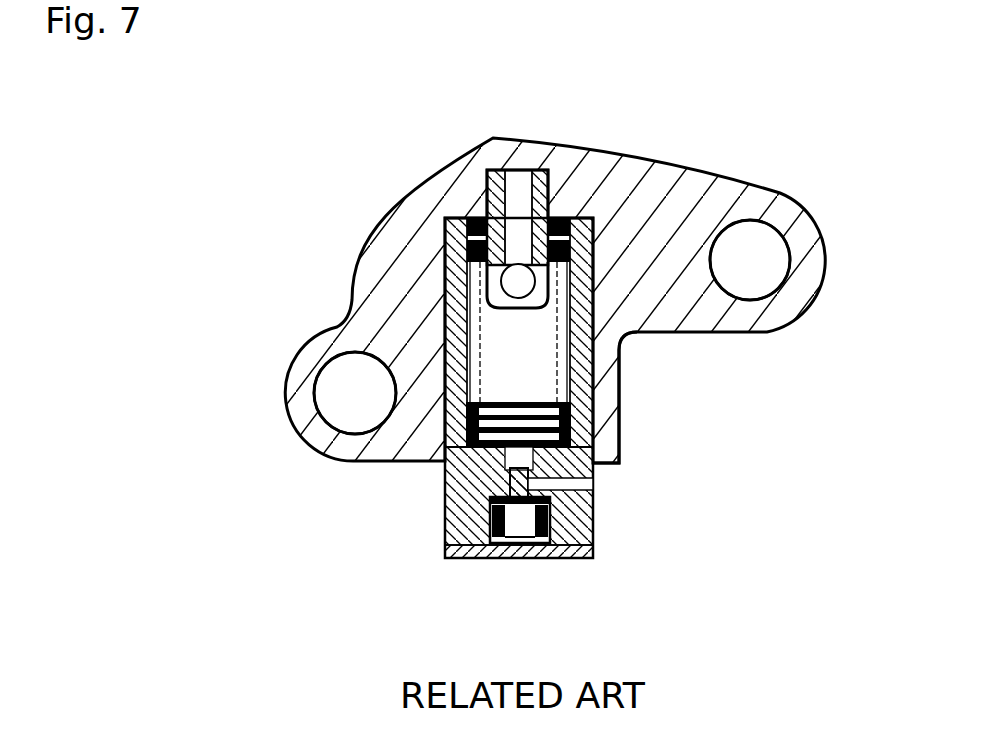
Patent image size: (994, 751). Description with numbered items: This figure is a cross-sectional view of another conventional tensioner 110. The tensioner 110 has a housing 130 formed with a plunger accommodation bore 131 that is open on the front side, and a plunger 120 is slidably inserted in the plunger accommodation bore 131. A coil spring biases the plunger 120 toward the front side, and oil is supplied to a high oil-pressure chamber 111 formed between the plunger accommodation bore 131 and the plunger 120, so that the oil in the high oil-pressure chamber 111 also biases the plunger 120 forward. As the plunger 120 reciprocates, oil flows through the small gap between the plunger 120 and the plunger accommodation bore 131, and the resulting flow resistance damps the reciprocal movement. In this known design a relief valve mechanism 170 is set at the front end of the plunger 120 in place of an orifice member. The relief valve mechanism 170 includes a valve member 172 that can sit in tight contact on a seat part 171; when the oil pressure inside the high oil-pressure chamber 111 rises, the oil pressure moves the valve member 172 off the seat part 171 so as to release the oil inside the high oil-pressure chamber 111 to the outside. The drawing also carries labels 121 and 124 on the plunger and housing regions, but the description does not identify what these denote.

The tensioner 110 is at (516, 344).
The housing 130 is at (672, 213).
The plunger accommodation bore 131 is at (592, 370).
The plunger 120 is at (460, 333).
The plunger 121 is at (470, 383).
The high oil-pressure chamber 111 is at (518, 351).
The seat part 171 is at (477, 492).
The oil supply passage 124 is at (593, 483).
The relief valve mechanism 170 is at (512, 517).
The valve member 172 is at (521, 503).